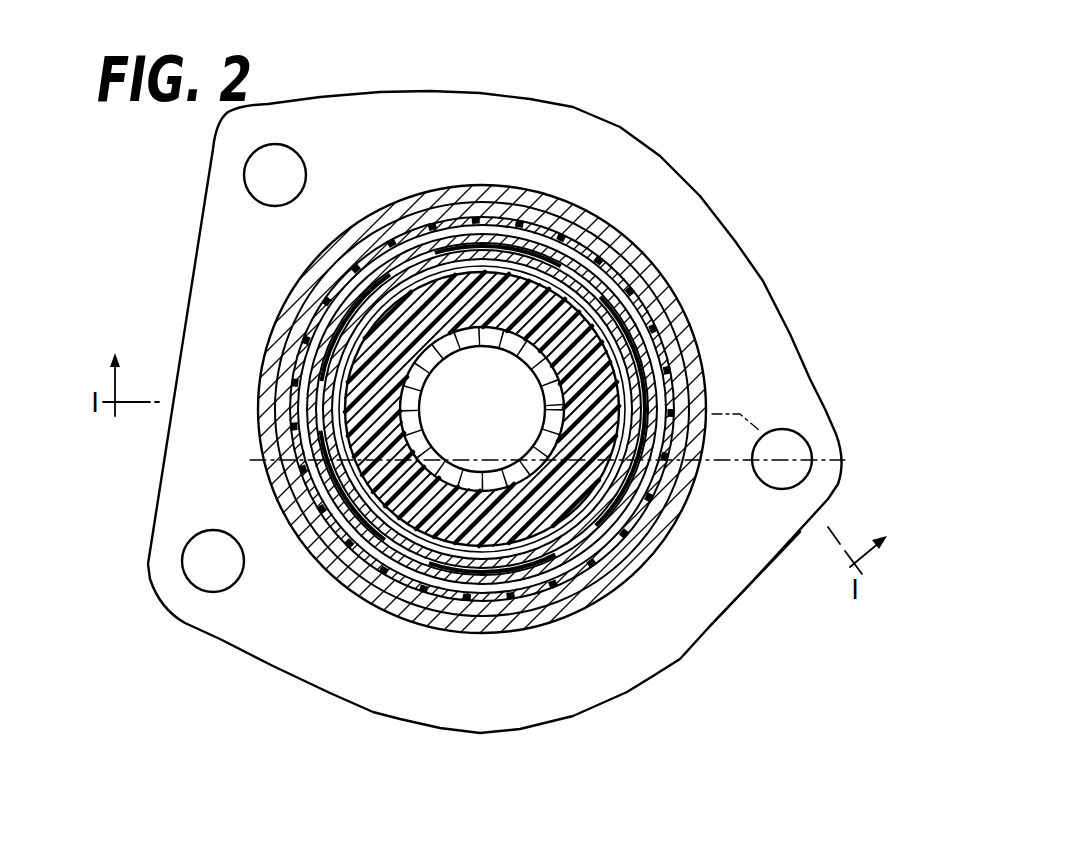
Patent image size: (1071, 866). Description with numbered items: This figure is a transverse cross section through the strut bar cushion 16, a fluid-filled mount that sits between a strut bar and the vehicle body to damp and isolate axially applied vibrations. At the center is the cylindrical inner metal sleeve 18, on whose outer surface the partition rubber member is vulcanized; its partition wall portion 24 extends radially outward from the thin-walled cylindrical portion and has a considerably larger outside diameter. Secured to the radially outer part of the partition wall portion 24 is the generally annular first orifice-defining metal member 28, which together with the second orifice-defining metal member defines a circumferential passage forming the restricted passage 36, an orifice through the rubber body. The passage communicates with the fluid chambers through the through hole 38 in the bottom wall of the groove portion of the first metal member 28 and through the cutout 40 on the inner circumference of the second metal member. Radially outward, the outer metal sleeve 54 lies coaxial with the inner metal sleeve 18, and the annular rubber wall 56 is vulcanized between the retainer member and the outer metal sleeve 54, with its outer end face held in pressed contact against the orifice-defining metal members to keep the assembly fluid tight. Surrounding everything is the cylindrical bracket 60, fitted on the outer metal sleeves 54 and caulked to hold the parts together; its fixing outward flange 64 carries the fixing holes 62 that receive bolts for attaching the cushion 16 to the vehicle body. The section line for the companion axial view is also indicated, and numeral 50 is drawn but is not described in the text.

The strut bar cushion 16 is at (803, 176).
The inner metal sleeve 18 is at (548, 435).
The partition wall portion 24 is at (392, 401).
The first orifice-defining metal member 28 is at (303, 547).
The restricted passage 36 is at (455, 250).
The through hole 38 is at (650, 415).
The cutout 40 is at (602, 510).
The inner ring 50 is at (491, 473).
The outer metal sleeve 54 is at (660, 315).
The annular rubber wall 56 is at (562, 237).
The cylindrical bracket 60 is at (688, 668).
The fixing holes 62 is at (262, 162).
The fixing outward flange 64 is at (733, 577).